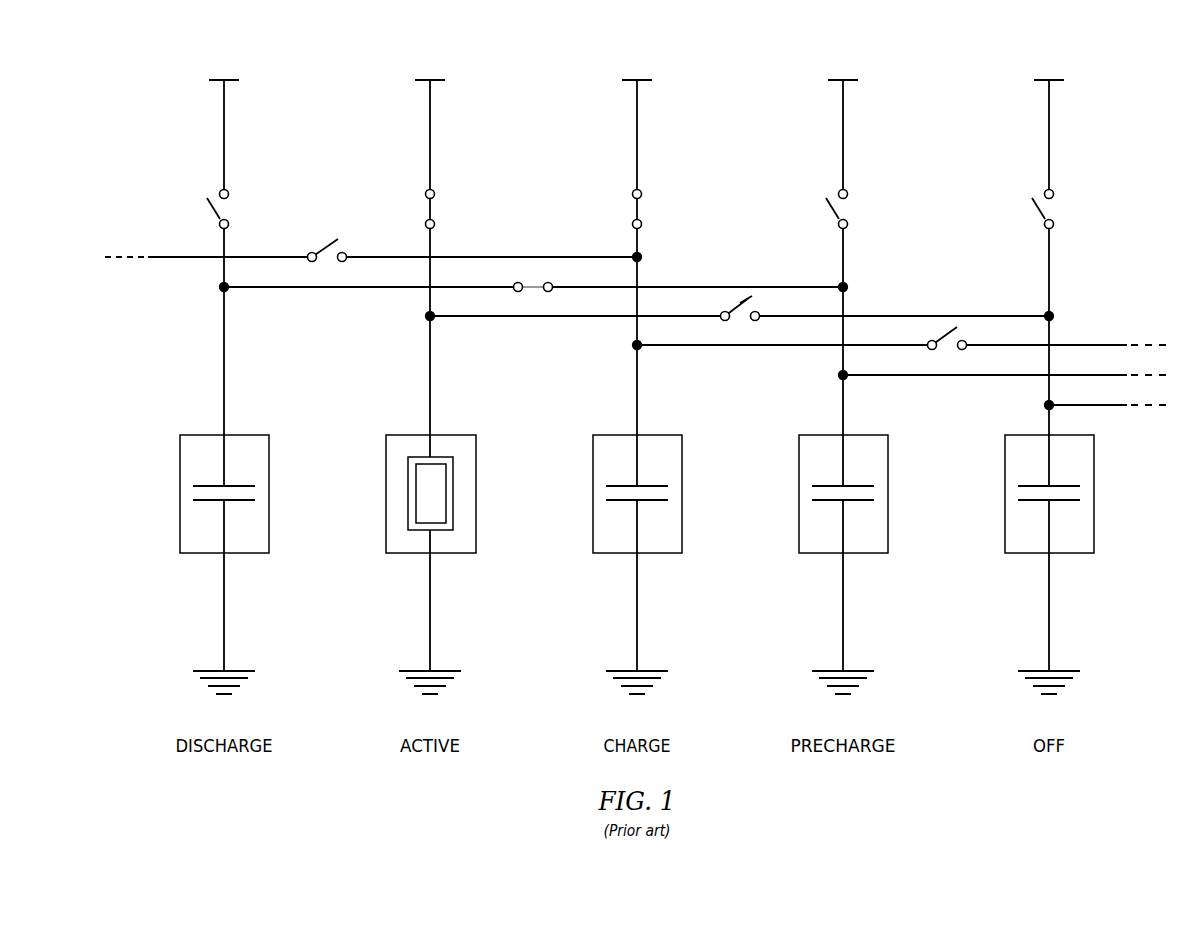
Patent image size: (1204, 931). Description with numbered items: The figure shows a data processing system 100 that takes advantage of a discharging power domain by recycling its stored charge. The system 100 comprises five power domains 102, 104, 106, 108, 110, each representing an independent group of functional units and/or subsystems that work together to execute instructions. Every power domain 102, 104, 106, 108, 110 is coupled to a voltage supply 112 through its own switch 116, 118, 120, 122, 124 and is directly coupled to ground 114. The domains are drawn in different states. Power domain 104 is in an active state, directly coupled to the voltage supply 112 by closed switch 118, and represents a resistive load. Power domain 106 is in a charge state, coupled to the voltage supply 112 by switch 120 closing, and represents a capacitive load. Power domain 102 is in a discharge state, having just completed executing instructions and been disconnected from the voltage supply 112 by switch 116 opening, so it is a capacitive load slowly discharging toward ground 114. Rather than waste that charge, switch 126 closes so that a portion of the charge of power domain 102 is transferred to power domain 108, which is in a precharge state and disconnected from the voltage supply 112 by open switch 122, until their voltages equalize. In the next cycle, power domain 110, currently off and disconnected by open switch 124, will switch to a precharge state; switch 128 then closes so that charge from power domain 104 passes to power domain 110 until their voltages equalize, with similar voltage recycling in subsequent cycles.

The data processing system 100 is at (1135, 105).
The power domain 102 is at (195, 435).
The power domain 104 is at (401, 435).
The power domain 106 is at (608, 435).
The power domain 108 is at (814, 435).
The power domain 110 is at (1020, 435).
The voltage supply 112 is at (217, 80).
The ground 114 is at (202, 671).
The switch 116 is at (210, 213).
The switch 118 is at (418, 213).
The switch 120 is at (623, 213).
The switch 122 is at (830, 213).
The switch 124 is at (1035, 213).
The switch 126 is at (533, 278).
The switch 128 is at (744, 302).